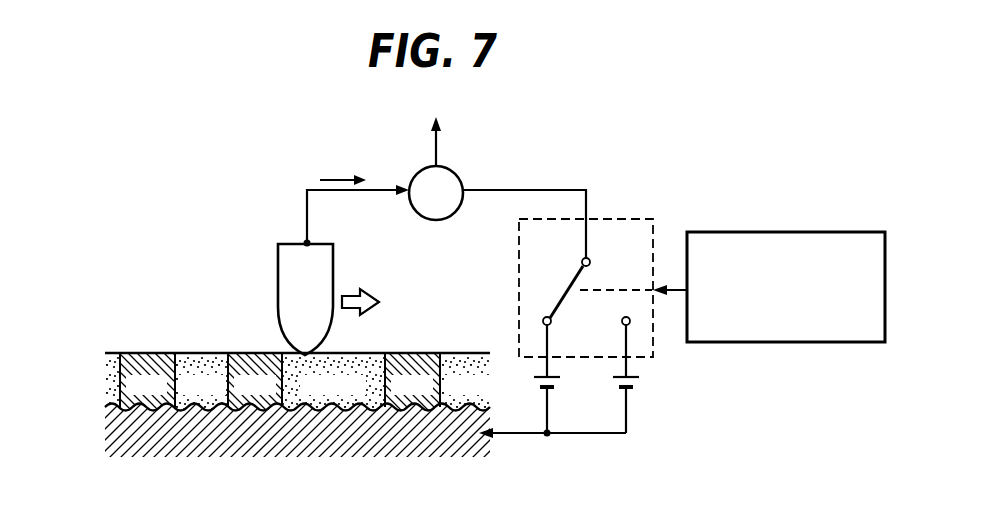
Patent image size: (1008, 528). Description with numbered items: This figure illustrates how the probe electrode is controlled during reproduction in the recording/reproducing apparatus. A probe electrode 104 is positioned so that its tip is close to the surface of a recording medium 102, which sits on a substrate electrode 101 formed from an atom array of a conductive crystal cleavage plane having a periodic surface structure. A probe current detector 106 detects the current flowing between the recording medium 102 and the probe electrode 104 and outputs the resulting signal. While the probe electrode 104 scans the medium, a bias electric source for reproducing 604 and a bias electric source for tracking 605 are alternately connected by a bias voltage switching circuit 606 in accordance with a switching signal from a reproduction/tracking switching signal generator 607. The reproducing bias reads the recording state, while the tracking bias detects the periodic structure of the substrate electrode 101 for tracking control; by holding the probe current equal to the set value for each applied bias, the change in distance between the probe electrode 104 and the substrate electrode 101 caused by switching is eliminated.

The substrate electrode 101 is at (106, 436).
The recording medium 102 is at (137, 353).
The probe electrode 104 is at (278, 280).
The probe current detector 106 is at (458, 176).
The bias electric source for reproducing 604 is at (532, 392).
The bias electric source for tracking 605 is at (613, 392).
The bias voltage switching circuit 606 is at (614, 219).
The reproduction/tracking switching signal generator 607 is at (764, 232).